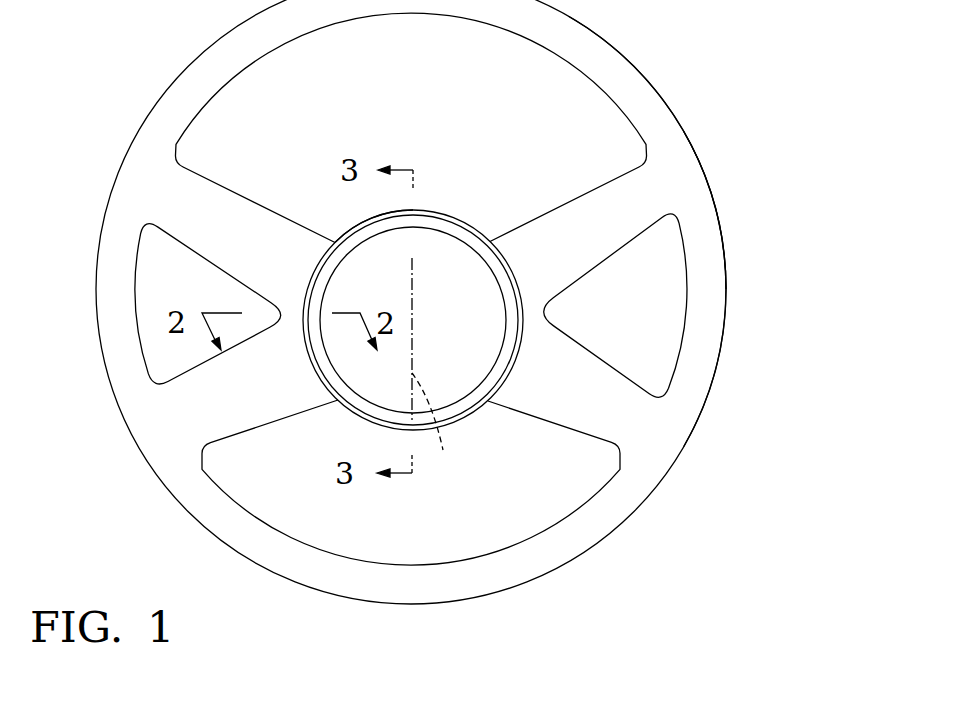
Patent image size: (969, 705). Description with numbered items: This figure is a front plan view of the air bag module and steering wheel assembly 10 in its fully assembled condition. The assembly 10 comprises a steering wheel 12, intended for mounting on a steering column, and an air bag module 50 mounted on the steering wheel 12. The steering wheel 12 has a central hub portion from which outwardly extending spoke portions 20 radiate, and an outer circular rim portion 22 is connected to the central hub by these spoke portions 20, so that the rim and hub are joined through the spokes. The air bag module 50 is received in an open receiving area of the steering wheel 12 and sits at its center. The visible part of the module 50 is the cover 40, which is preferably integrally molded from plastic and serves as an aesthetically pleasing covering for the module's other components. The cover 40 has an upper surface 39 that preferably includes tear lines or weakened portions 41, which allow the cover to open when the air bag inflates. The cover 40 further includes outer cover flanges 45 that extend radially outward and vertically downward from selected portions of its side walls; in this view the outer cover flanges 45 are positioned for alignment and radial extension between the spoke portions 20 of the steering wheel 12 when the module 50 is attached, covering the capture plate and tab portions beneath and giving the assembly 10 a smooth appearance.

The air bag module and steering wheel assembly 10 is at (633, 42).
The steering wheel 12 is at (703, 163).
The outer circular rim portion 22 is at (713, 293).
The spoke portions 20 is at (224, 203).
The cover 40 is at (432, 209).
The outer cover flanges 45 is at (458, 222).
The air bag module 50 is at (348, 227).
The upper surface 39 is at (478, 306).
The tear lines or weakened portions 41 is at (437, 424).